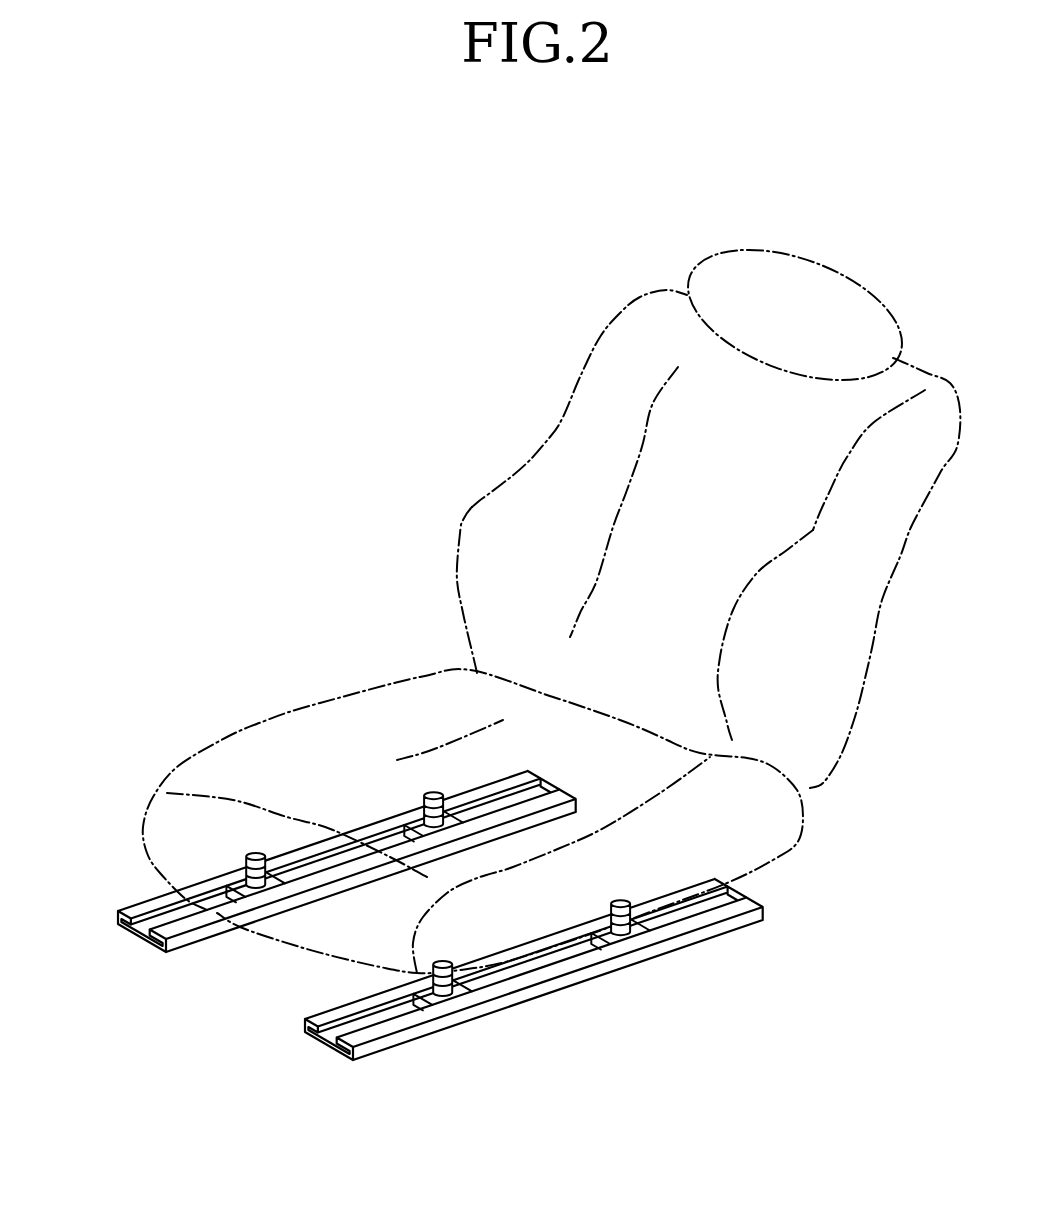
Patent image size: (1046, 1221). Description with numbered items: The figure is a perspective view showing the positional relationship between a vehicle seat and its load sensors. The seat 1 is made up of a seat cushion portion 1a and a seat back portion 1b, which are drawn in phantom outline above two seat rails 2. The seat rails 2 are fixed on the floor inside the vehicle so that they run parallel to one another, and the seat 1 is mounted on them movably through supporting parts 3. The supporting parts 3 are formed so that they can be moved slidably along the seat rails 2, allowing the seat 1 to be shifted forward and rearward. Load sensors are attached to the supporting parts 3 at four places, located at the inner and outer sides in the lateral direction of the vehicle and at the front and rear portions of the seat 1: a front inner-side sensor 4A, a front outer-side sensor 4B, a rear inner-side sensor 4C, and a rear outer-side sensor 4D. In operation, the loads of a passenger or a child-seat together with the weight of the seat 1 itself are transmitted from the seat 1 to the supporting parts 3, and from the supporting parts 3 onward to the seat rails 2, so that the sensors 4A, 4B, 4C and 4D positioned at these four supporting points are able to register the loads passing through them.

The seat 1 is at (552, 598).
The seat cushion portion 1a is at (267, 720).
The seat back portion 1b is at (472, 507).
The seat rail 2 is at (117, 913).
The supporting part 3 is at (236, 849).
The front inner-side sensor 4A is at (247, 878).
The front outer-side sensor 4B is at (452, 985).
The rear inner-side sensor 4C is at (428, 811).
The rear outer-side sensor 4D is at (630, 927).